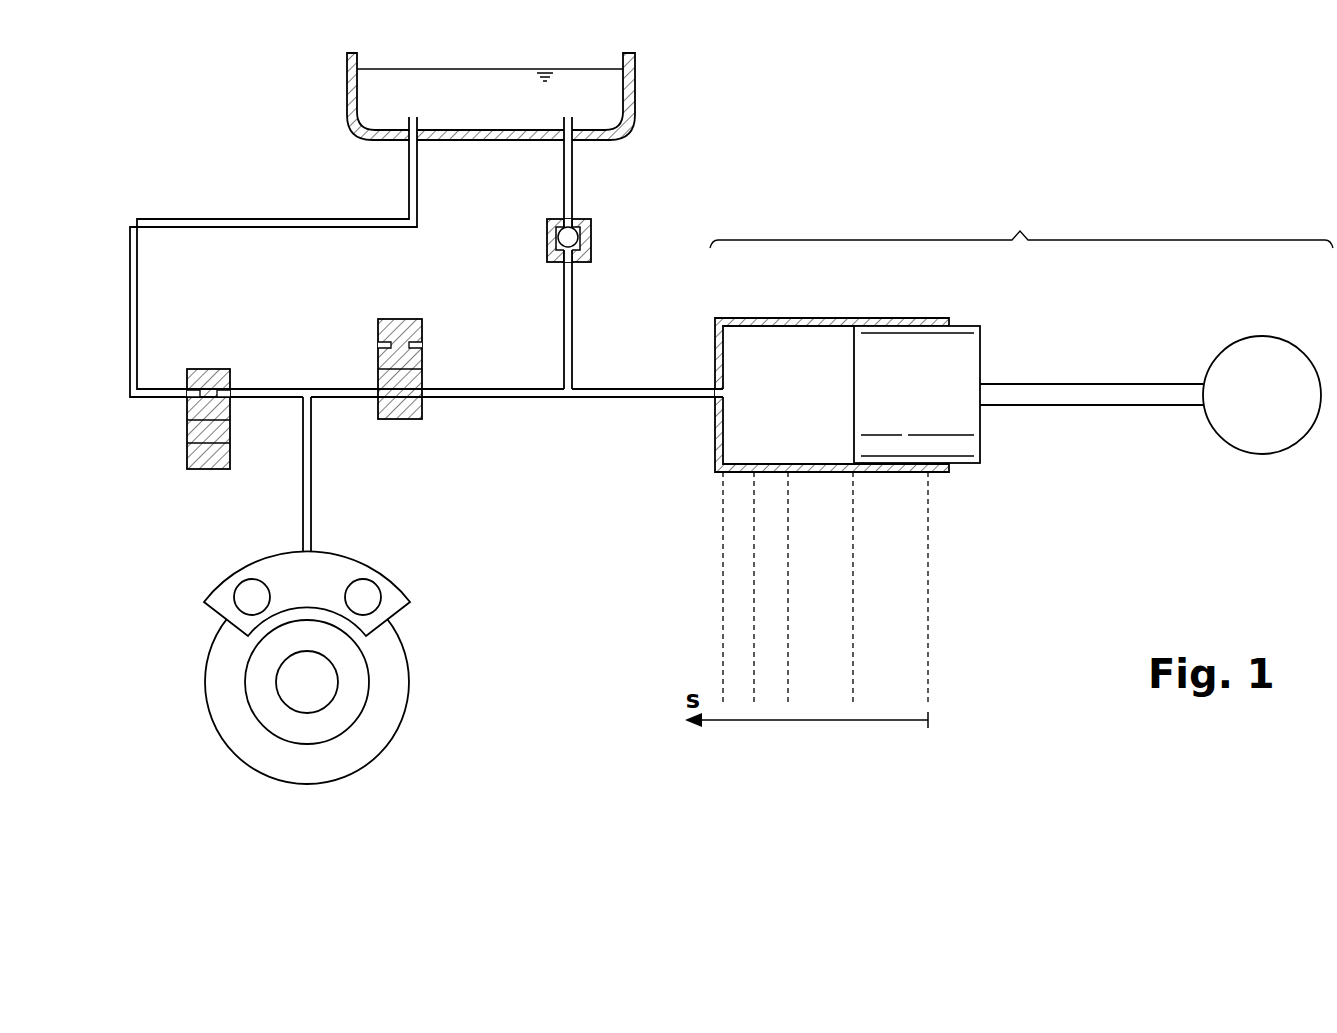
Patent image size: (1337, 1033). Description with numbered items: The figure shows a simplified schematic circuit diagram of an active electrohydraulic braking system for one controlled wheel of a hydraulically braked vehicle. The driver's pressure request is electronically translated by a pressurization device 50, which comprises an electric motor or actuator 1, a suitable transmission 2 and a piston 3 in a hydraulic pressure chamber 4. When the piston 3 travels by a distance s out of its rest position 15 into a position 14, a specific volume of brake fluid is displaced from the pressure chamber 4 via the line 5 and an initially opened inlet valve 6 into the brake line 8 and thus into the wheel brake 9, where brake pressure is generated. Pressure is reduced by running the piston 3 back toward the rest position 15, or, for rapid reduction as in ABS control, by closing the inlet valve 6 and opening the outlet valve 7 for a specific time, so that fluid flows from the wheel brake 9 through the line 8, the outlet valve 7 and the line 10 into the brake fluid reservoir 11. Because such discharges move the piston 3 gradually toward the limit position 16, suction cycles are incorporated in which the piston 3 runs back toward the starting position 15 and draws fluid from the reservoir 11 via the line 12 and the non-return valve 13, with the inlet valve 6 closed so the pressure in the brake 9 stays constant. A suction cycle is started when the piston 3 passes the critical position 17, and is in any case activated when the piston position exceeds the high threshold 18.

The electric motor or actuator 1 is at (1262, 336).
The transmission 2 is at (1096, 400).
The piston 3 is at (983, 347).
The hydraulic pressure chamber 4 is at (780, 338).
The line 5 is at (617, 398).
The inlet valve 6 is at (402, 319).
The outlet valve 7 is at (208, 369).
The brake line 8 is at (311, 466).
The wheel brake 9 is at (365, 561).
The line 10 is at (137, 256).
The brake fluid reservoir 11 is at (347, 78).
The line 12 is at (564, 177).
The non-return valve 13 is at (591, 237).
The position 14 is at (853, 584).
The rest position 15 is at (928, 537).
The limit position 16 is at (723, 527).
The critical position value 17 is at (788, 575).
The high threshold 18 is at (754, 618).
The pressurization device 50 is at (1021, 223).